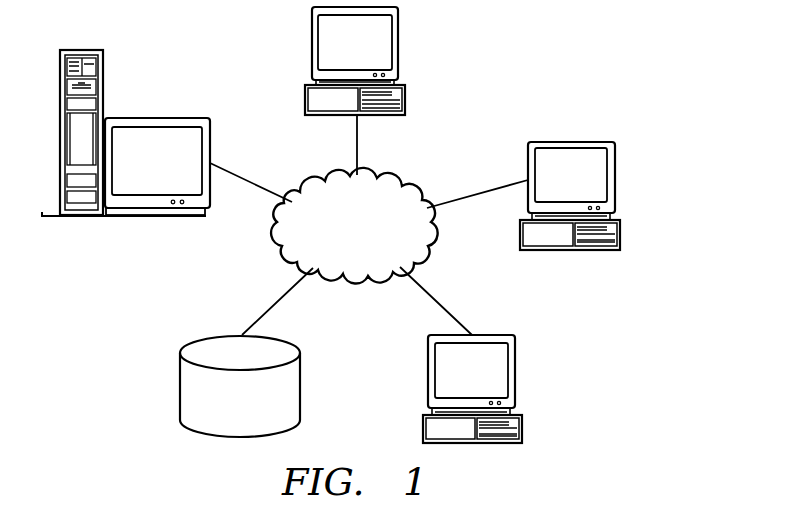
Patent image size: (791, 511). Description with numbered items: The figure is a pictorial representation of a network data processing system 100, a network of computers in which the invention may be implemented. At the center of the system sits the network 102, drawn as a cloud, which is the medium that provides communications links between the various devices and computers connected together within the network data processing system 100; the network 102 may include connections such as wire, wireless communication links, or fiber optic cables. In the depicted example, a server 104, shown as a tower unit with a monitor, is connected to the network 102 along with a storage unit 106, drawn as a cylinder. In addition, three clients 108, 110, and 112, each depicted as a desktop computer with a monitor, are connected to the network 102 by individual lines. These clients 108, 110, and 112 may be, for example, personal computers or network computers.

The network data processing system 100 is at (534, 40).
The network 102 is at (385, 180).
The server 104 is at (157, 118).
The storage unit 106 is at (180, 388).
The client 108 is at (515, 372).
The client 110 is at (615, 178).
The client 112 is at (398, 45).